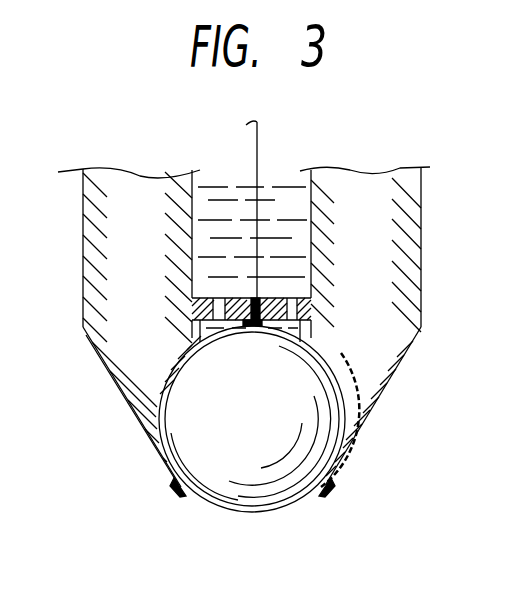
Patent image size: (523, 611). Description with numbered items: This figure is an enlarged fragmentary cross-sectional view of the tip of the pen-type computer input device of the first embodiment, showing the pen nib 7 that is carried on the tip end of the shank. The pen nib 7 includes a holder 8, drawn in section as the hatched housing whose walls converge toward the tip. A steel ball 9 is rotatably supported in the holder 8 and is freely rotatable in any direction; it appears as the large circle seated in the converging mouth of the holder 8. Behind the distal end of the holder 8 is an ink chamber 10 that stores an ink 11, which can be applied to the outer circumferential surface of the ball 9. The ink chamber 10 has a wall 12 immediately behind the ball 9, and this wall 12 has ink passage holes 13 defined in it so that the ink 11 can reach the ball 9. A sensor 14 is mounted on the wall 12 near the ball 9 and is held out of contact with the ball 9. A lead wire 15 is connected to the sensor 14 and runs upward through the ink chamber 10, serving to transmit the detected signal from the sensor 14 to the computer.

The pen nib 7 is at (83, 229).
The holder 8 is at (380, 277).
The steel ball 9 is at (290, 494).
The ink chamber 10 is at (300, 252).
The ink 11 is at (292, 207).
The wall 12 is at (311, 310).
The ink passage holes 13 is at (192, 310).
The sensor 14 is at (257, 330).
The lead wire 15 is at (260, 143).